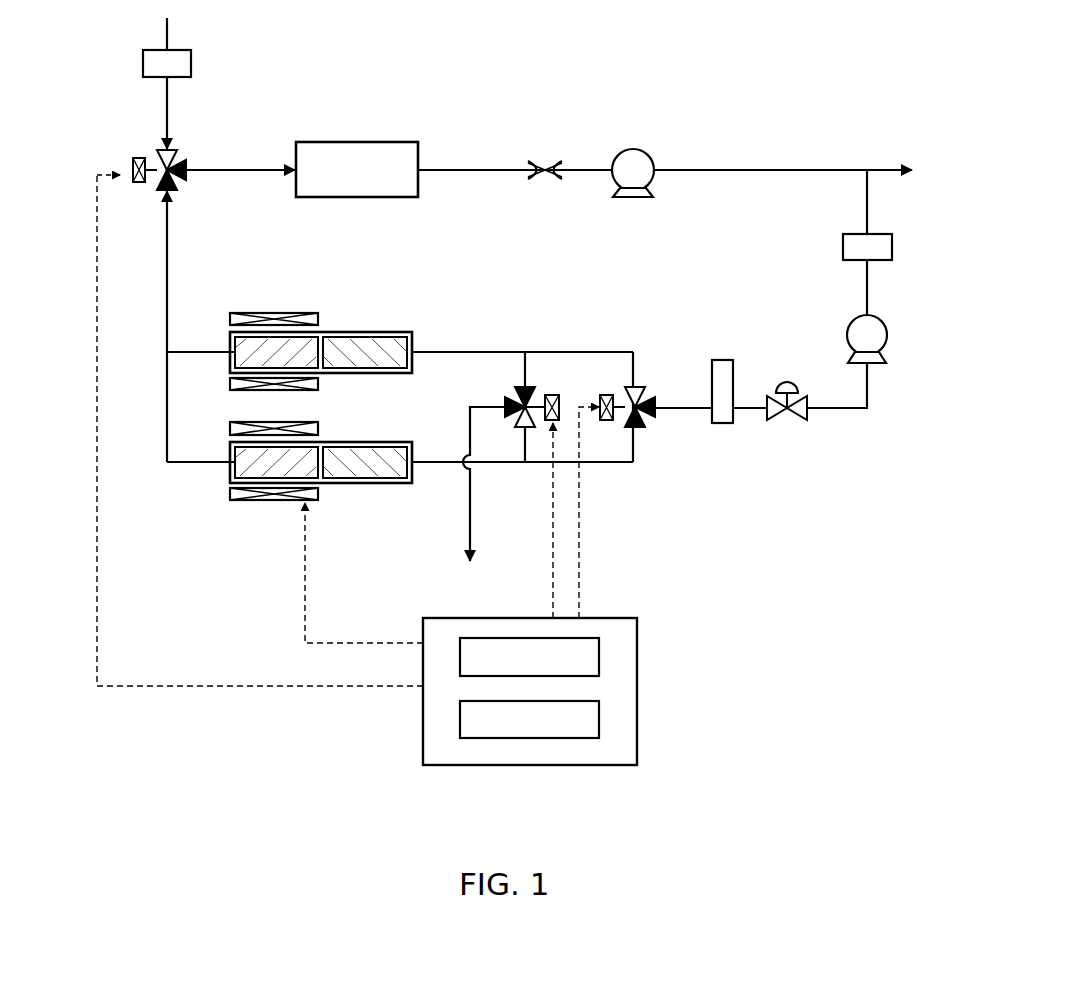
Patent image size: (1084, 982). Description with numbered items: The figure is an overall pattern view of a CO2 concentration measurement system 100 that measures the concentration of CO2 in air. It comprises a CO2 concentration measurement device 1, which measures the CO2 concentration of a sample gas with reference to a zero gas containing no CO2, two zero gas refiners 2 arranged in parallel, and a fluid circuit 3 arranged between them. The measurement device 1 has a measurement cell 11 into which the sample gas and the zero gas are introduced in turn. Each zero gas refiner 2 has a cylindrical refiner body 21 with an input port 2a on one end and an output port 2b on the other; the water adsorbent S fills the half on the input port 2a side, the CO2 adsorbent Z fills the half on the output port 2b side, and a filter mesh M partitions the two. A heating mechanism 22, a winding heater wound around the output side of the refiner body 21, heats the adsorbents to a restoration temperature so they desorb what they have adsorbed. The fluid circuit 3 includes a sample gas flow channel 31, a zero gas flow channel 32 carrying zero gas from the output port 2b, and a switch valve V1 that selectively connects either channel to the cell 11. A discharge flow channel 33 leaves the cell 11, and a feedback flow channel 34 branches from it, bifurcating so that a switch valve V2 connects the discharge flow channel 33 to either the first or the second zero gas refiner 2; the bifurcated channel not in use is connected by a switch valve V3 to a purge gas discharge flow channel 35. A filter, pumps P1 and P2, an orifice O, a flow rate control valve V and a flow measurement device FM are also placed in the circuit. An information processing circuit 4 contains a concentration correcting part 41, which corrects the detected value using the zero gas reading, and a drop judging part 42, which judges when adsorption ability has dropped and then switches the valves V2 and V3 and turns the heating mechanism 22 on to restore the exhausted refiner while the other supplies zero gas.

The CO2 concentration measurement system 100 is at (618, 88).
The CO2 concentration measurement device 1 is at (410, 140).
The measurement cell 11 is at (328, 140).
The zero gas refiner 2 is at (392, 328).
The input port 2a is at (415, 350).
The output port 2b is at (226, 350).
The refiner body 21 is at (360, 331).
The heating mechanism 22 is at (272, 311).
The filter mesh M is at (334, 375).
The fluid circuit 3 is at (818, 152).
The sample gas flow channel 31 is at (172, 118).
The zero gas flow channel 32 is at (165, 268).
The discharge flow channel 33 is at (745, 173).
The feedback flow channel 34 is at (864, 272).
The purge gas discharge flow channel 35 is at (472, 506).
The information processing circuit 4 is at (640, 690).
The concentration correcting part 41 is at (602, 715).
The drop judging part 42 is at (602, 651).
The switch valve V1 is at (128, 165).
The switch valve V2 is at (648, 395).
The switch valve V3 is at (553, 393).
The flow rate control valve V is at (787, 423).
The orifice O is at (545, 160).
The pump P1 is at (650, 160).
The pump P2 is at (846, 336).
The flow measurement device FM is at (724, 426).